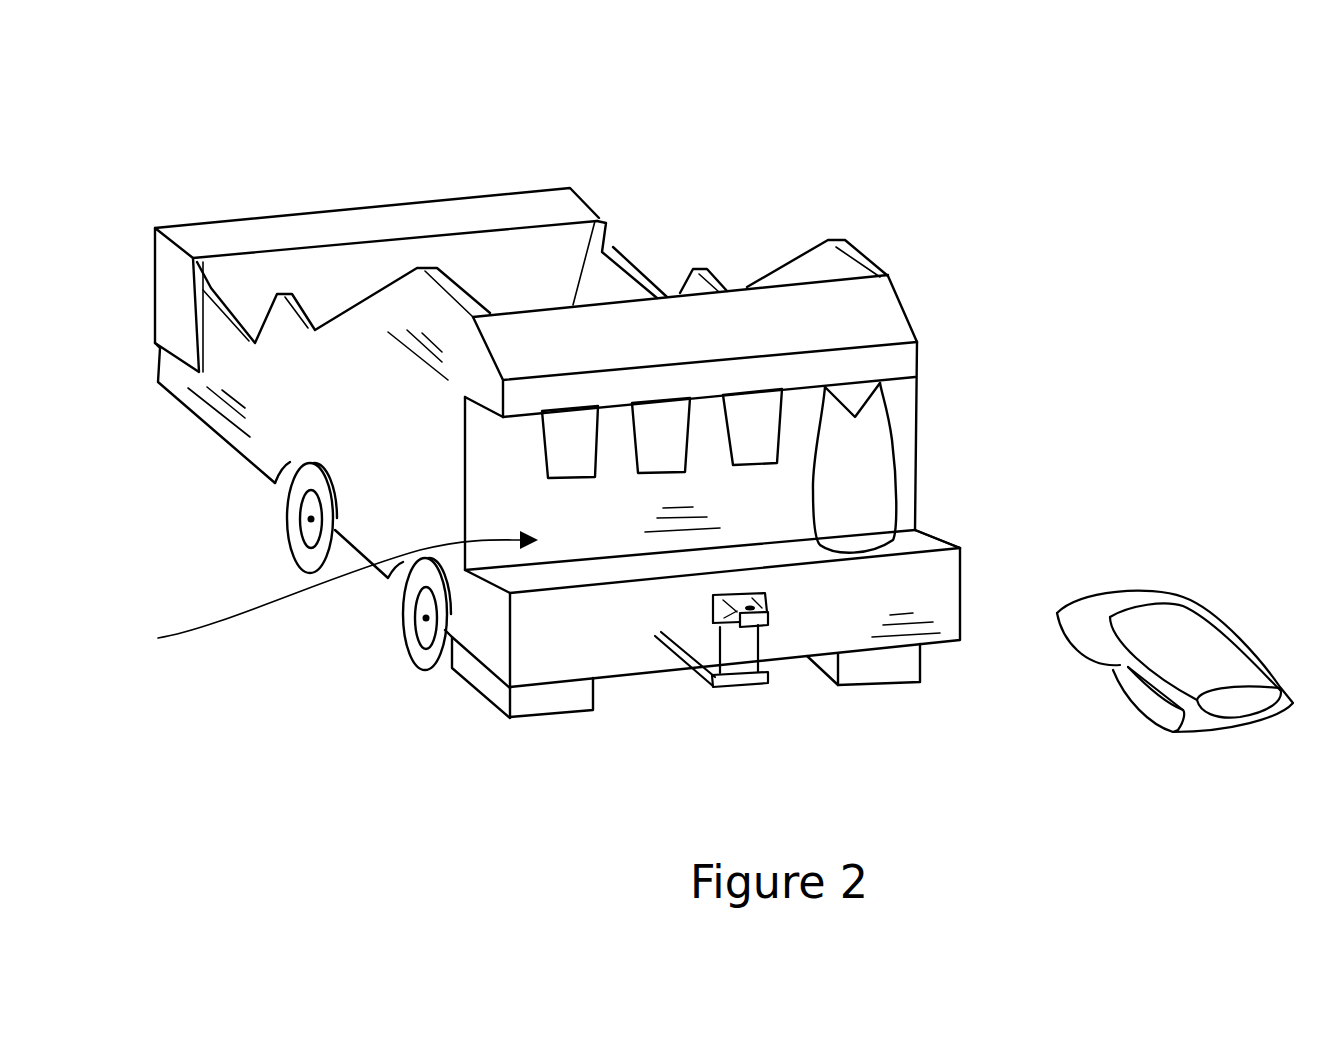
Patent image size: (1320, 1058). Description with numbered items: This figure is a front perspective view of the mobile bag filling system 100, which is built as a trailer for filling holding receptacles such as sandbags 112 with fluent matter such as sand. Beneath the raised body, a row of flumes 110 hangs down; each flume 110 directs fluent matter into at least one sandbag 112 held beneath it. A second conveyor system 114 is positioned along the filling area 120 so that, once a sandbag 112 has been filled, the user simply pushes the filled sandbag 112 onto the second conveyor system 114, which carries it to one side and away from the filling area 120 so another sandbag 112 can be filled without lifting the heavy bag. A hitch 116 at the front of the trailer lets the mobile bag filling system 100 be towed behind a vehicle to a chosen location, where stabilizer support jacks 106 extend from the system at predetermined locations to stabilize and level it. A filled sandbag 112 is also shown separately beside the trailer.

The mobile bag filling system 100 is at (255, 171).
The stabilizer support jacks 106 is at (558, 700).
The flume 110 is at (570, 413).
The sandbag 112 is at (1192, 628).
The second conveyor system 114 is at (928, 547).
The hitch 116 is at (716, 662).
The filling area 120 is at (322, 590).